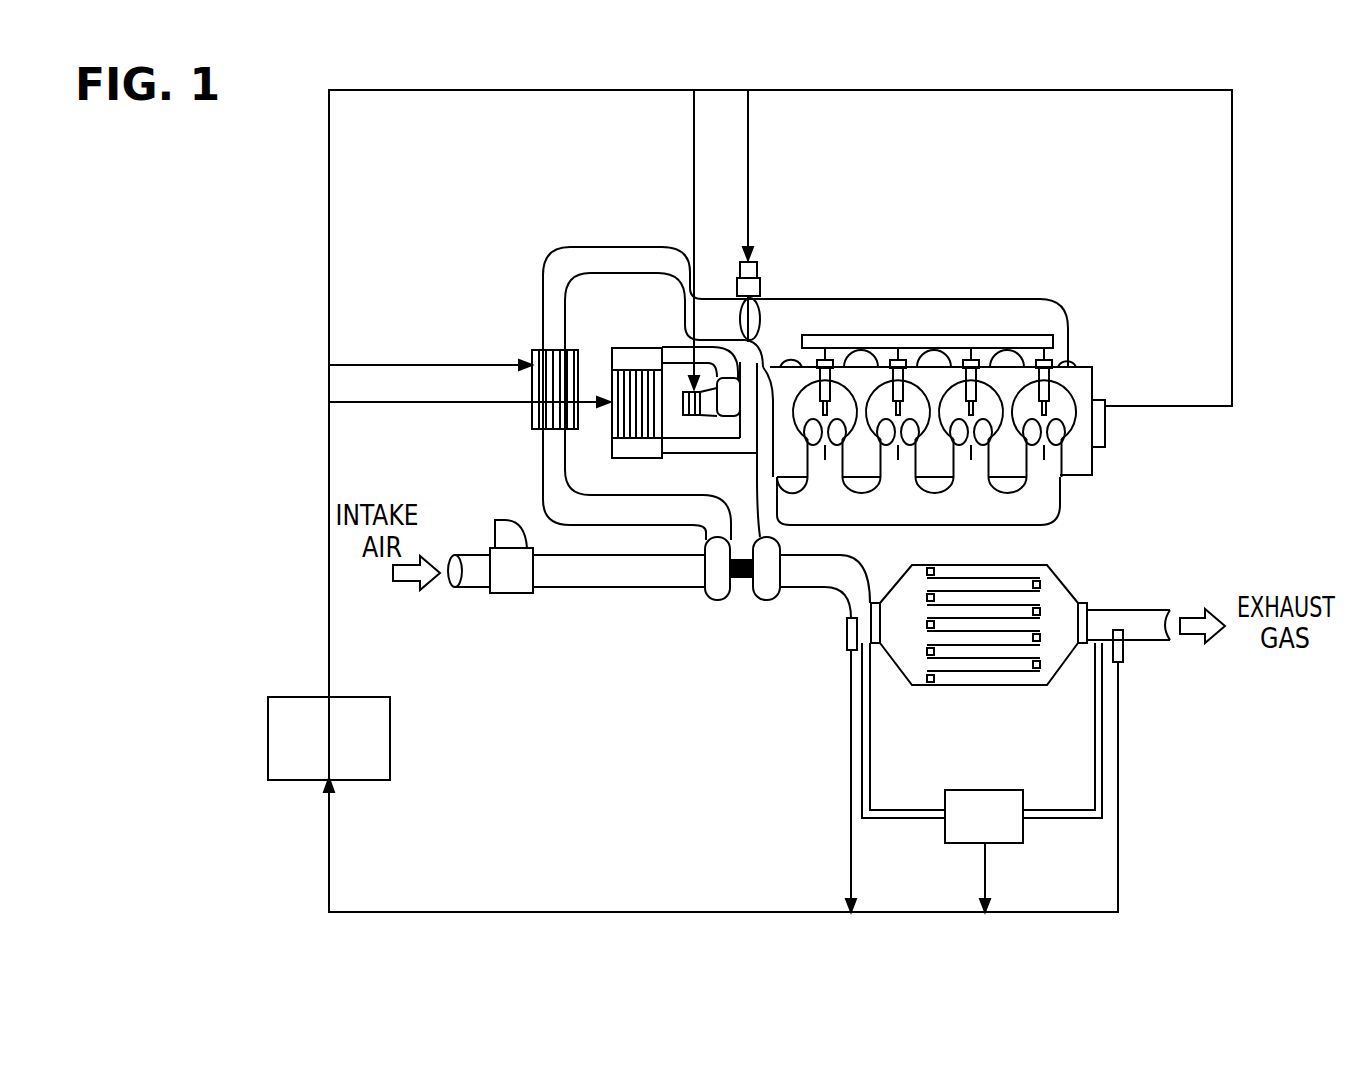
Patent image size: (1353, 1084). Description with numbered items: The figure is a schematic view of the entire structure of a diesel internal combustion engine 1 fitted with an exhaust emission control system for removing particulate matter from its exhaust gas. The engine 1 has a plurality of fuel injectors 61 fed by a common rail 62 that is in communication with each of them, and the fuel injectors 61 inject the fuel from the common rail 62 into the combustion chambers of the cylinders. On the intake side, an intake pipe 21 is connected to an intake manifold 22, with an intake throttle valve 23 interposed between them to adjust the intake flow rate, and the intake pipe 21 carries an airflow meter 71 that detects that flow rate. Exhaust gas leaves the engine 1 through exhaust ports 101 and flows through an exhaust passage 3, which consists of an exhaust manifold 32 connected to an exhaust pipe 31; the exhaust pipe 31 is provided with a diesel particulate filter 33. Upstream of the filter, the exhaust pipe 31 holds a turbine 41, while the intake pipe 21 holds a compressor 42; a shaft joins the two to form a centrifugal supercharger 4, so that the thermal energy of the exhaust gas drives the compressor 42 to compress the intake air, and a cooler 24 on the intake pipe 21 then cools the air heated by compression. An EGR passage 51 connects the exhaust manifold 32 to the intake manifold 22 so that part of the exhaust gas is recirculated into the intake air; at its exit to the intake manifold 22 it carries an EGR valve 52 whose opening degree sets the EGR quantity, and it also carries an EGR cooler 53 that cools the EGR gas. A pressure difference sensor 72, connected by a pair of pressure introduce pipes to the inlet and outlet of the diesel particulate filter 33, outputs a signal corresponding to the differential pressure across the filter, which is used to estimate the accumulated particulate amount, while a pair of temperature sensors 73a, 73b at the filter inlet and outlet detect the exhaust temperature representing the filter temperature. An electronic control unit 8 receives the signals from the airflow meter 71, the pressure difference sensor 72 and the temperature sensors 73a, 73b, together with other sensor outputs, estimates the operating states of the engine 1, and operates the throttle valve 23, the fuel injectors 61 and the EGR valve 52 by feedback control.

The internal combustion engine 1 is at (1102, 470).
The exhaust ports 101 is at (1070, 420).
The intake pipe 21 is at (613, 247).
The intake manifold 22 is at (1040, 299).
The intake throttle valve 23 is at (752, 300).
The cooler 24 is at (532, 415).
The exhaust passage 3 is at (983, 651).
The exhaust pipe 31 is at (832, 600).
The exhaust manifold 32 is at (1062, 505).
The diesel particulate filter 33 is at (955, 665).
The centrifugal supercharger 4 is at (762, 680).
The turbine 41 is at (760, 600).
The compressor 42 is at (711, 600).
The EGR passage 51 is at (753, 438).
The EGR valve 52 is at (737, 383).
The EGR cooler 53 is at (625, 350).
The fuel injectors 61 is at (1057, 407).
The common rail 62 is at (1023, 333).
The airflow meter 71 is at (513, 592).
The pressure difference sensor 72 is at (990, 790).
The temperature sensor 73a is at (847, 648).
The temperature sensor 73b is at (1123, 660).
The electronic control unit 8 is at (392, 727).